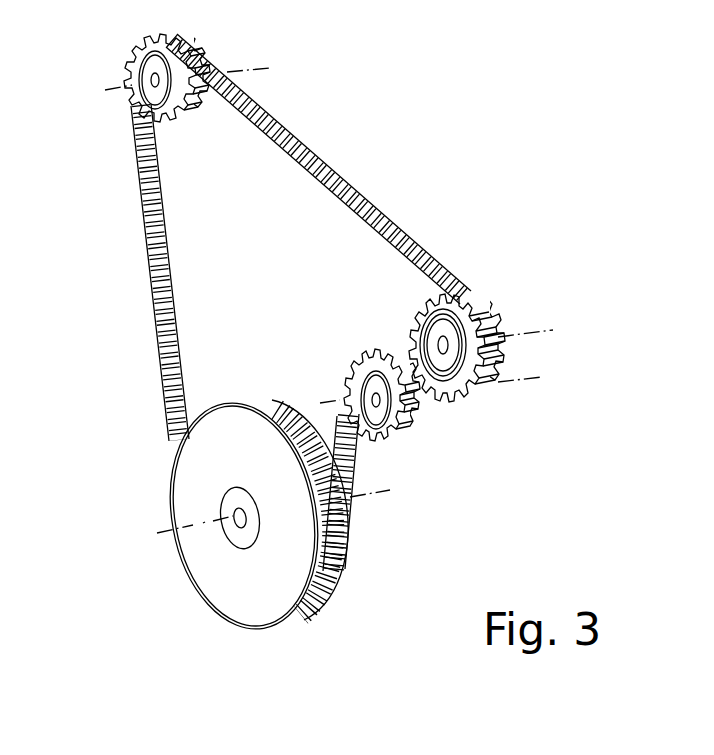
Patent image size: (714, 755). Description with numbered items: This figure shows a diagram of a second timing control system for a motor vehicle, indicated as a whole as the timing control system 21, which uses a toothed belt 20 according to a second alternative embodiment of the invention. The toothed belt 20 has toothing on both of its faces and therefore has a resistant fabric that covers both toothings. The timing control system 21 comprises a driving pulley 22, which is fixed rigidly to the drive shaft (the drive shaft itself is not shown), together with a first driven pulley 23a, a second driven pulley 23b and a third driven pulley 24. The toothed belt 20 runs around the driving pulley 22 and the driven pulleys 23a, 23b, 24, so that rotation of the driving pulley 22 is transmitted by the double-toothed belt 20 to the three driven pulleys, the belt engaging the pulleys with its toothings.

The toothed belt 20 is at (150, 268).
The timing control system 21 is at (402, 192).
The driving pulley 22 is at (200, 478).
The first driven pulley 23a is at (128, 52).
The second driven pulley 23b is at (405, 428).
The third driven pulley 24 is at (487, 294).